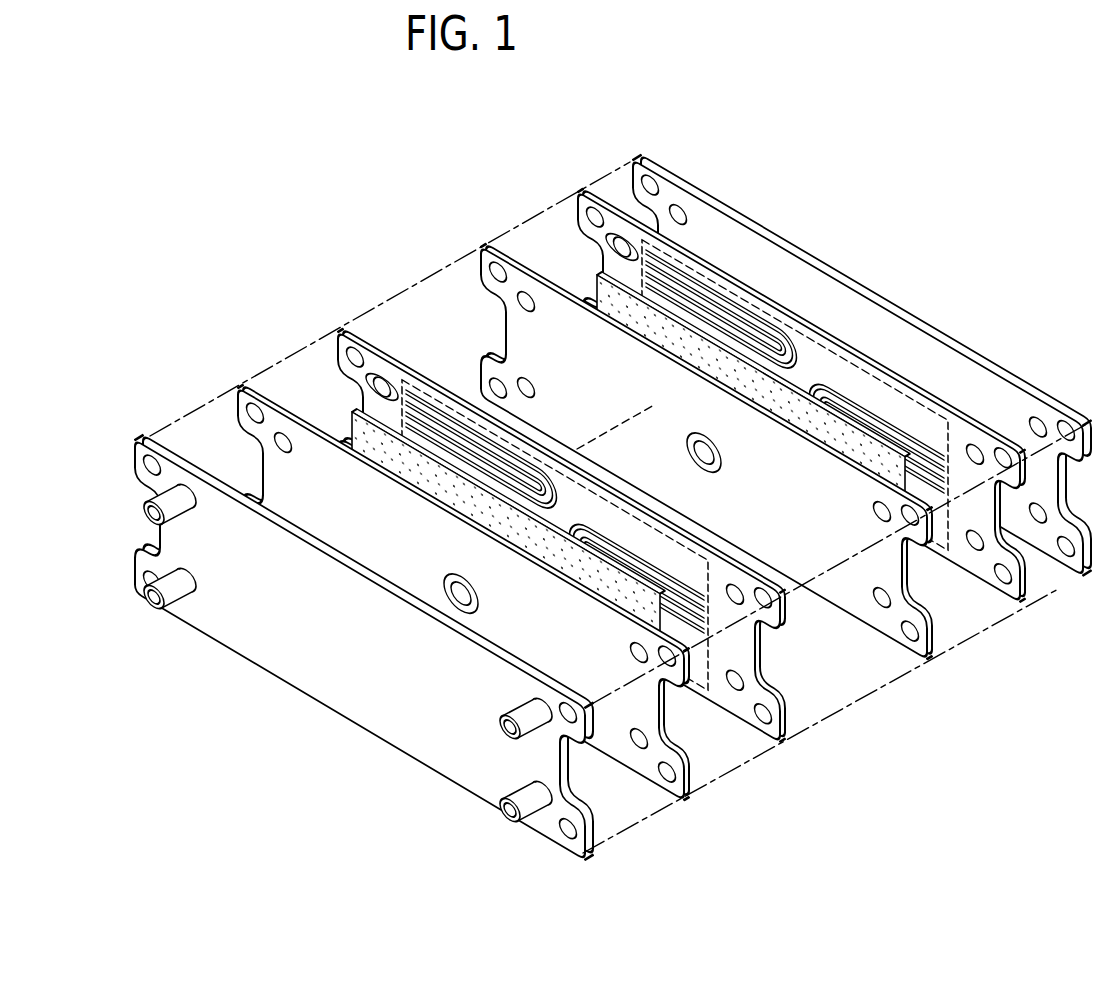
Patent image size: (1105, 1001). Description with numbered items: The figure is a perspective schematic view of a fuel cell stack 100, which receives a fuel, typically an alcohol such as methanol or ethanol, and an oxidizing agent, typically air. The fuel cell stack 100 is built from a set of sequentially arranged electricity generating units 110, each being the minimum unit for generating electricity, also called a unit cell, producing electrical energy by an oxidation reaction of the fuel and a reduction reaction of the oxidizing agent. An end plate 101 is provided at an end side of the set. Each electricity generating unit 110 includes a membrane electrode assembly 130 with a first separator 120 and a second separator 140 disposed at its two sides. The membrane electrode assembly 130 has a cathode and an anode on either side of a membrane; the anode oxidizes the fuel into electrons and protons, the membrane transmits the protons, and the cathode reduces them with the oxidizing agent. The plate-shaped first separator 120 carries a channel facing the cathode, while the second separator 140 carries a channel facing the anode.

The fuel cell stack 100 is at (190, 190).
The end plate 101 is at (157, 445).
The electricity generating unit 110 is at (611, 444).
The first separator 120 is at (566, 476).
The membrane electrode assembly 130 is at (597, 276).
The second separator 140 is at (612, 209).